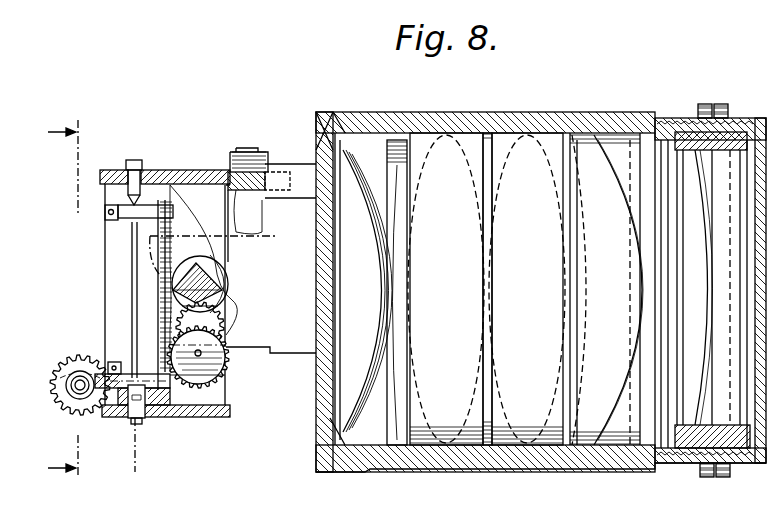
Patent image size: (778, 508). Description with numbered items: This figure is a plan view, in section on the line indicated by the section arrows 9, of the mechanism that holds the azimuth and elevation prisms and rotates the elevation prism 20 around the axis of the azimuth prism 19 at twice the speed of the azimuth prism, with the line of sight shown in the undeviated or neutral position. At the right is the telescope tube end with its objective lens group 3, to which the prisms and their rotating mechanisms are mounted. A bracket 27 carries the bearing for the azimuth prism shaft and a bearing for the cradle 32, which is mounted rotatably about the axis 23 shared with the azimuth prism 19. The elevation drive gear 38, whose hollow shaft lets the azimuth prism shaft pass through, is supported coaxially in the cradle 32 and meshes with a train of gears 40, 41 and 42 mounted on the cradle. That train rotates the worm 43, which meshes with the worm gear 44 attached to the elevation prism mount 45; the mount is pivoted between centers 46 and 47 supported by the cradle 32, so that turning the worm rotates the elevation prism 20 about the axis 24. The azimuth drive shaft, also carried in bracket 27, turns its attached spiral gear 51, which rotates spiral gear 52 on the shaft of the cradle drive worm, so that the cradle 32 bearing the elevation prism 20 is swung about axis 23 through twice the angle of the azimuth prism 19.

The lens barrel 3 is at (340, 165).
The section line 9- 9 is at (62, 307).
The azimuth prism 19 is at (215, 277).
The elevation prism 20 is at (106, 271).
The axis 23 is at (195, 291).
The axis 24 is at (136, 472).
The bracket 27 is at (300, 345).
The cradle 32 is at (210, 417).
The elevation drive gear 38 is at (218, 322).
The gear 40 is at (226, 372).
The gear 41 is at (165, 400).
The gear 42 is at (55, 393).
The worm 43 is at (66, 372).
The worm gear 44 is at (108, 368).
The elevation prism mount 45 is at (108, 215).
The center 46 is at (140, 172).
The center 47 is at (132, 410).
The spiral gear 51 is at (243, 152).
The spiral gear 52 is at (228, 175).